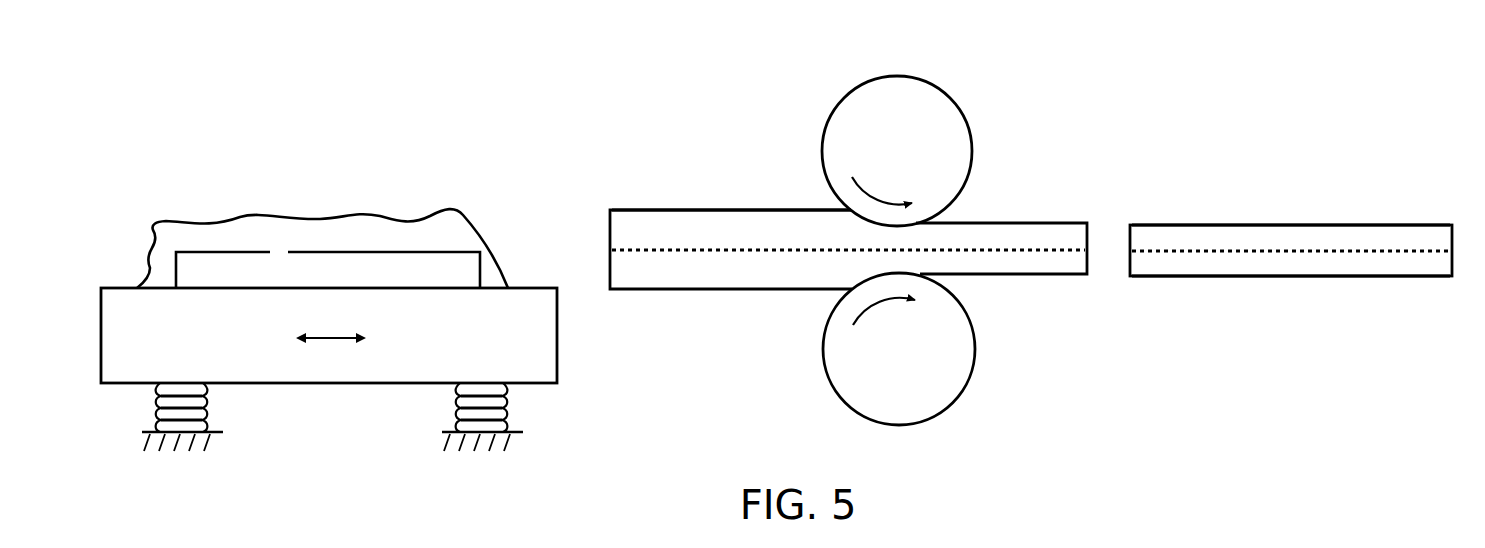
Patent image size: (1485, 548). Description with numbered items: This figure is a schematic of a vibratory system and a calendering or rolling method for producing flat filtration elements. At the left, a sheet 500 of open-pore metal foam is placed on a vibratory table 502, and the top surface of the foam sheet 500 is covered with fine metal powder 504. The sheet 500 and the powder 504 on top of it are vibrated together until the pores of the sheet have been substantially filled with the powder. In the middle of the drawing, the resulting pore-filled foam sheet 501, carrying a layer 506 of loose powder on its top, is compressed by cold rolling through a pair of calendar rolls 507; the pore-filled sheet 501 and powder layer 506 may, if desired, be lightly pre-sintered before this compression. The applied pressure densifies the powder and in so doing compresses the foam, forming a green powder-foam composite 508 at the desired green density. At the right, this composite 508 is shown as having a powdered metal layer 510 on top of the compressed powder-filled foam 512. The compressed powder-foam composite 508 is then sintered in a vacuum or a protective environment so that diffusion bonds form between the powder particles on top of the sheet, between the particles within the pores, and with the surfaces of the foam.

The sheet of open-pore metal foam 500 is at (328, 270).
The pore-filled foam sheet 501 is at (701, 279).
The vibratory table 502 is at (327, 404).
The fine metal powder 504 is at (464, 223).
The layer of loose powder 506 is at (700, 222).
The calendar rolls 507 is at (945, 112).
The green powder-foam composite 508 is at (1378, 278).
The powdered metal layer 510 is at (1260, 240).
The compressed powder-filled foam 512 is at (1222, 262).